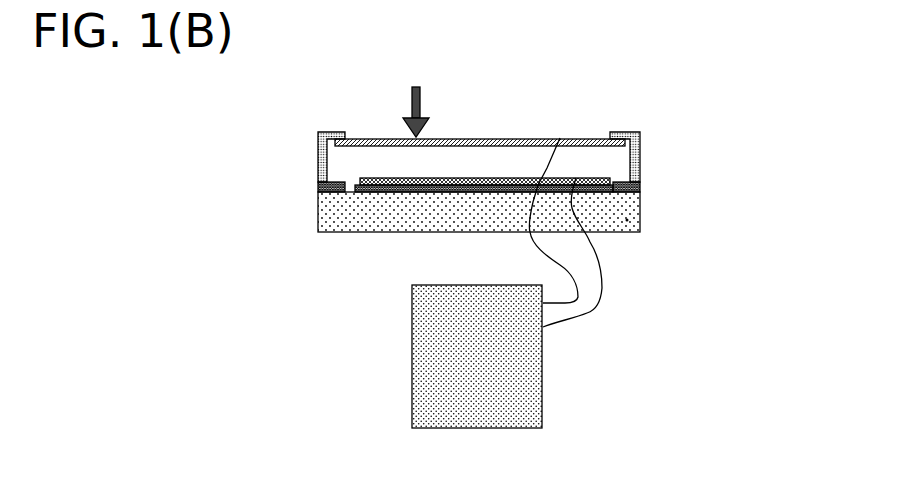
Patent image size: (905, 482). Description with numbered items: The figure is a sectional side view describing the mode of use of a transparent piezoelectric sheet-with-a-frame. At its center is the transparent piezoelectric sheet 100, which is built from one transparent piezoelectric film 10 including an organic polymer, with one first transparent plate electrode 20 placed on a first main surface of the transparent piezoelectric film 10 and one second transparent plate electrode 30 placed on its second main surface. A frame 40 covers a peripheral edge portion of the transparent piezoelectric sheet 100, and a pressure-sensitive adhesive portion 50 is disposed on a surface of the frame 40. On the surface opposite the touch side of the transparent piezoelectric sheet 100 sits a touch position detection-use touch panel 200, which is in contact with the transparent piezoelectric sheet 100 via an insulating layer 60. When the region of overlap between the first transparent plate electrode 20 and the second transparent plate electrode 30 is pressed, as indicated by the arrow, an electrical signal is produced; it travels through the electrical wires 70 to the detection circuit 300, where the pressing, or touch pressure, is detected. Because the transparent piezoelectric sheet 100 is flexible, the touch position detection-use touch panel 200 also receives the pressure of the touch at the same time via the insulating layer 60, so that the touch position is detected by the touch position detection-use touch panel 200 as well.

The transparent piezoelectric sheet 100 is at (569, 122).
The first transparent plate electrode 20 is at (580, 153).
The transparent piezoelectric film 10 is at (588, 153).
The second transparent plate electrode 30 is at (544, 160).
The touch position detection-use touch panel 200 is at (605, 186).
The frame 40 is at (318, 183).
The pressure-sensitive adhesive portion 50 is at (318, 193).
The insulating layer 60 is at (627, 220).
The electrical wires 70 is at (567, 272).
The detection circuit 300 is at (423, 363).